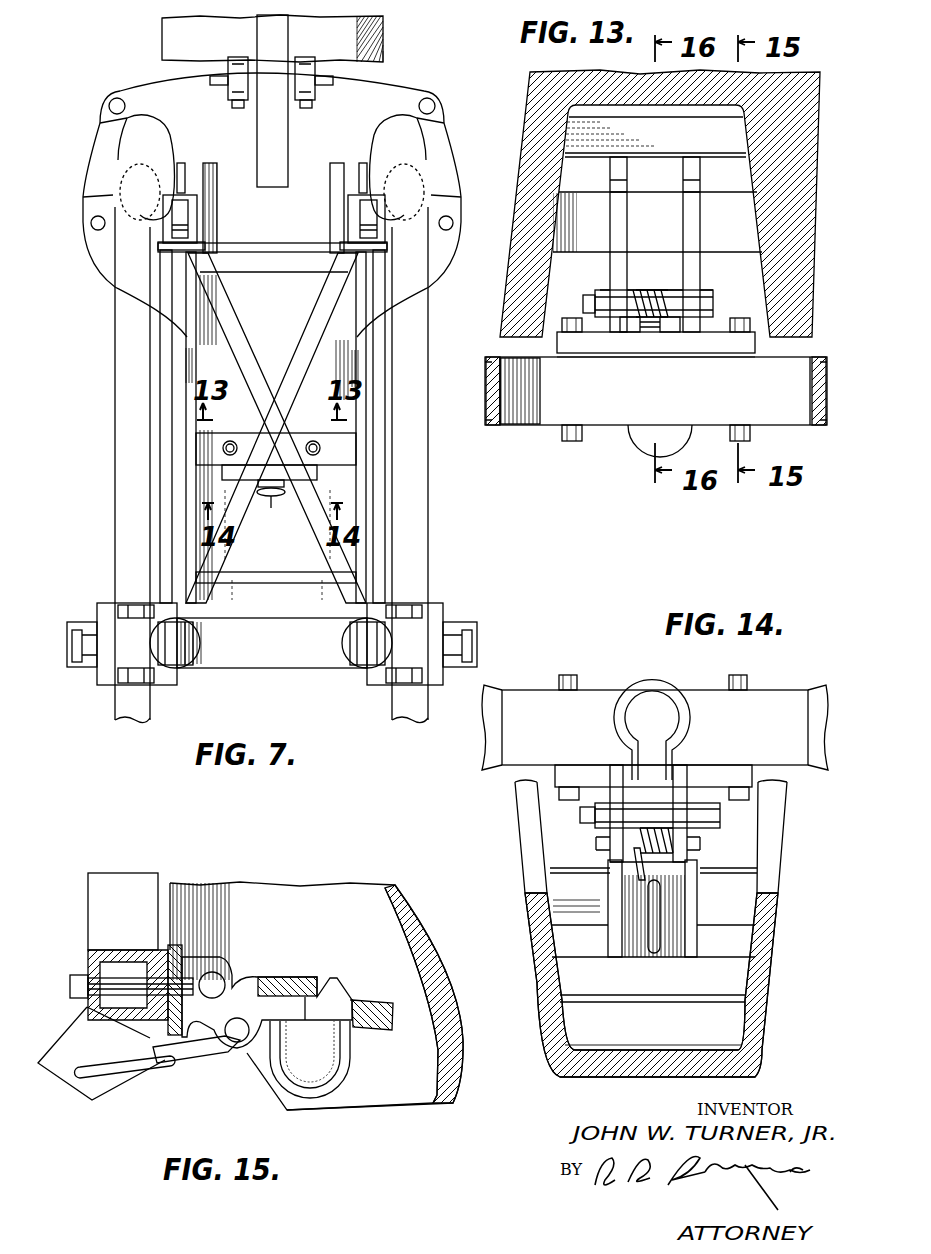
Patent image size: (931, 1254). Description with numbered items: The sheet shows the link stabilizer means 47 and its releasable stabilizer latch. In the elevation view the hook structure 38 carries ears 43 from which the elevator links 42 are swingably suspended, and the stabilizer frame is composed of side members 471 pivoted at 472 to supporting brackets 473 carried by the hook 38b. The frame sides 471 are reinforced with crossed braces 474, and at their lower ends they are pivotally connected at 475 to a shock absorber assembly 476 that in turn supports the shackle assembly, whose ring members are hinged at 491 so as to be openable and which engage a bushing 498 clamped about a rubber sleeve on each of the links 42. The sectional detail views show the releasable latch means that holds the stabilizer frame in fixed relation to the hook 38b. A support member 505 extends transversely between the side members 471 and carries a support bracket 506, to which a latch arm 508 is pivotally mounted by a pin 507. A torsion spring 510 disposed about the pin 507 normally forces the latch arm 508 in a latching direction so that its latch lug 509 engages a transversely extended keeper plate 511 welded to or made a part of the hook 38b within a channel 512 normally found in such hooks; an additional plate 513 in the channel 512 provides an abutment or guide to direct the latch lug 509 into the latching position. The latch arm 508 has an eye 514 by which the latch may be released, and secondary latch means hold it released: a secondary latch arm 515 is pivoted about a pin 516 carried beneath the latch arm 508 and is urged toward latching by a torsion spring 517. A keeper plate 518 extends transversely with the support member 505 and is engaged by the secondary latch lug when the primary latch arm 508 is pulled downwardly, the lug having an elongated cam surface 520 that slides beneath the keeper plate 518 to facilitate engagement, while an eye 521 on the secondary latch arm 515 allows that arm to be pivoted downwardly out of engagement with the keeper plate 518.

In FIG. 7, the hook structure 38 is at (129, 73).
In FIG. 7, the hook 38b is at (372, 95).
In FIG. 13, the hook 38b is at (521, 287).
In FIG. 14, the hook 38b is at (766, 976).
In FIG. 15, the hook 38b is at (400, 896).
In FIG. 7, the elevator links 42 is at (108, 350).
In FIG. 7, the ears 43 is at (100, 135).
In FIG. 7, the link stabilizer means 47 is at (160, 503).
In FIG. 7, the side members 471 is at (168, 443).
In FIG. 13, the side members 471 is at (497, 428).
In FIG. 14, the side members 471 is at (496, 762).
In FIG. 7, the pivot 472 is at (200, 207).
In FIG. 7, the supporting brackets 473 is at (185, 203).
In FIG. 7, the crossed braces 474 is at (218, 322).
In FIG. 7, the pivotal connection 475 is at (210, 665).
In FIG. 7, the shock absorber assembly 476 is at (329, 669).
In FIG. 7, the hinge 491 is at (471, 621).
In FIG. 7, the bushing 498 is at (459, 598).
In FIG. 13, the support member 505 is at (600, 416).
In FIG. 14, the support member 505 is at (598, 700).
In FIG. 15, the support member 505 is at (95, 950).
In FIG. 13, the support bracket 506 is at (630, 332).
In FIG. 15, the support bracket 506 is at (200, 956).
In FIG. 13, the pin 507 is at (732, 285).
In FIG. 14, the pin 507 is at (718, 816).
In FIG. 15, the pin 507 is at (214, 984).
In FIG. 13, the latch arm 508 is at (683, 262).
In FIG. 14, the latch arm 508 is at (635, 922).
In FIG. 15, the latch arm 508 is at (277, 966).
In FIG. 13, the latch lug 509 is at (692, 172).
In FIG. 15, the latch lug 509 is at (337, 983).
In FIG. 13, the torsion spring 510 is at (652, 320).
In FIG. 13, the keeper plate 511 is at (571, 253).
In FIG. 14, the keeper plate 511 is at (558, 912).
In FIG. 15, the keeper plate 511 is at (305, 980).
In FIG. 13, the channel 512 is at (575, 108).
In FIG. 14, the channel 512 is at (582, 1022).
In FIG. 15, the channel 512 is at (412, 1095).
In FIG. 13, the additional plate 513 is at (570, 132).
In FIG. 14, the additional plate 513 is at (573, 982).
In FIG. 15, the additional plate 513 is at (374, 1018).
In FIG. 14, the eye 514 is at (662, 900).
In FIG. 15, the eye 514 is at (348, 1078).
In FIG. 14, the secondary latch arm 515 is at (622, 768).
In FIG. 15, the secondary latch arm 515 is at (195, 1054).
In FIG. 14, the pin 516 is at (702, 850).
In FIG. 15, the pin 516 is at (237, 1044).
In FIG. 14, the torsion spring 517 is at (633, 872).
In FIG. 13, the keeper plate 518 is at (748, 341).
In FIG. 14, the keeper plate 518 is at (746, 781).
In FIG. 15, the keeper plate 518 is at (172, 948).
In FIG. 15, the cam surface 520 is at (155, 1038).
In FIG. 13, the eye 521 is at (645, 432).
In FIG. 14, the eye 521 is at (664, 690).
In FIG. 15, the eye 521 is at (98, 1080).